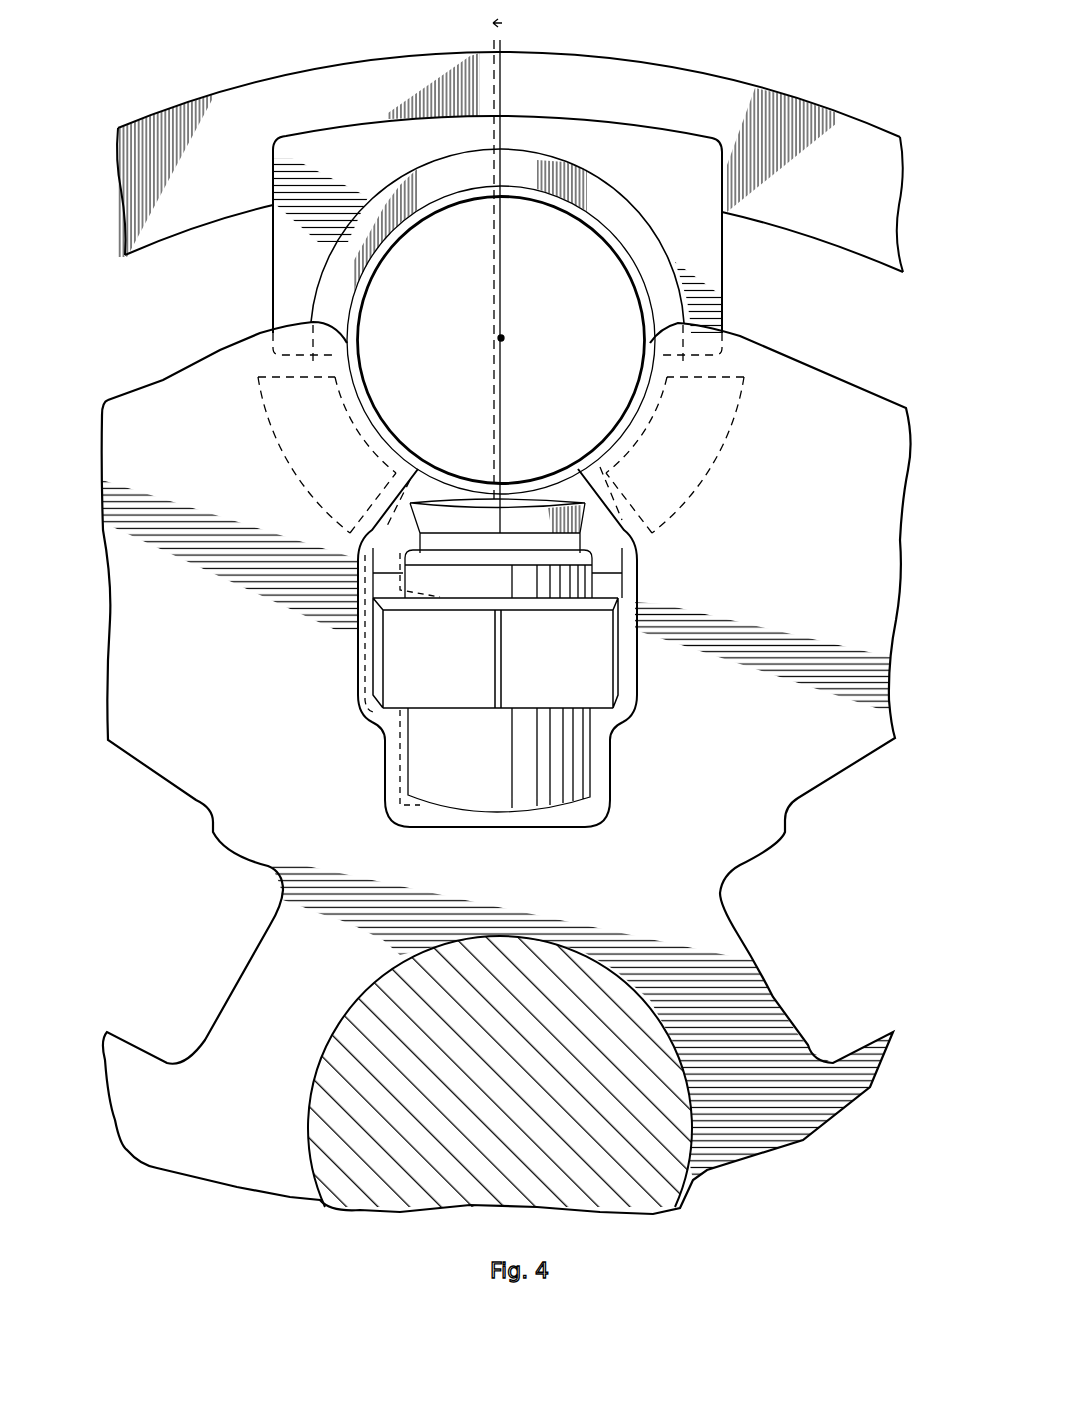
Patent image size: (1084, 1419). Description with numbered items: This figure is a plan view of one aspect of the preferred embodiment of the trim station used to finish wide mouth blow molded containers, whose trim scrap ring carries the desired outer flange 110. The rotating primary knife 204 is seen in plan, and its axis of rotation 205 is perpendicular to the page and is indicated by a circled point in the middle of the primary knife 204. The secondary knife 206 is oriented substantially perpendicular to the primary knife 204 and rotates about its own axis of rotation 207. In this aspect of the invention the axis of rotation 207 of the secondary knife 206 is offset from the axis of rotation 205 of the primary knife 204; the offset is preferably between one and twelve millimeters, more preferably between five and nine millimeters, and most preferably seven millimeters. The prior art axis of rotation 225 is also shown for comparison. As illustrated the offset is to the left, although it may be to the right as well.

The outer flange 110 is at (657, 263).
The primary knife 204 is at (347, 322).
The axis of rotation 205 is at (513, 338).
The secondary knife 206 is at (583, 512).
The axis of rotation 207 is at (488, 43).
The prior art axis of rotation 225 is at (510, 43).